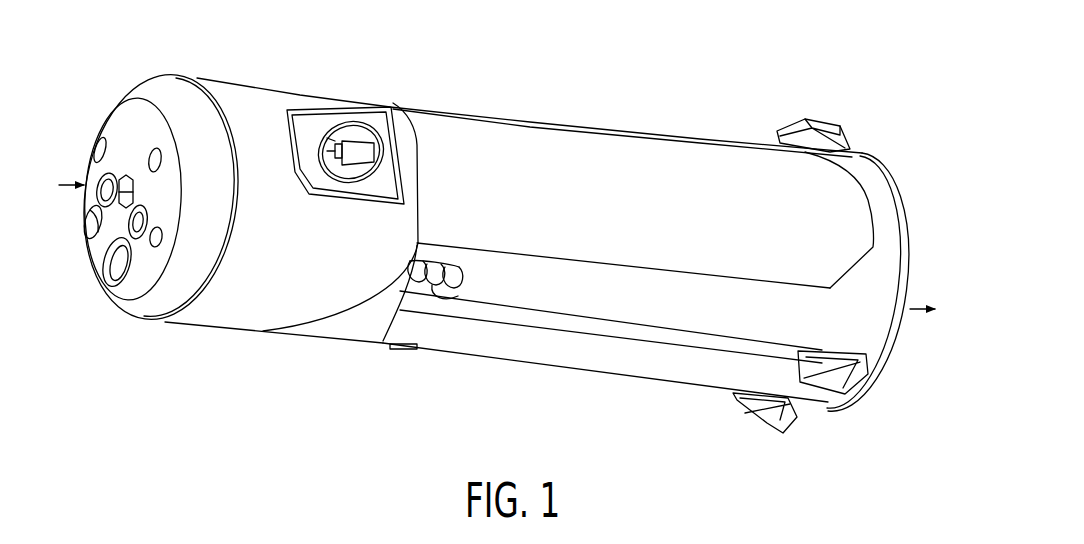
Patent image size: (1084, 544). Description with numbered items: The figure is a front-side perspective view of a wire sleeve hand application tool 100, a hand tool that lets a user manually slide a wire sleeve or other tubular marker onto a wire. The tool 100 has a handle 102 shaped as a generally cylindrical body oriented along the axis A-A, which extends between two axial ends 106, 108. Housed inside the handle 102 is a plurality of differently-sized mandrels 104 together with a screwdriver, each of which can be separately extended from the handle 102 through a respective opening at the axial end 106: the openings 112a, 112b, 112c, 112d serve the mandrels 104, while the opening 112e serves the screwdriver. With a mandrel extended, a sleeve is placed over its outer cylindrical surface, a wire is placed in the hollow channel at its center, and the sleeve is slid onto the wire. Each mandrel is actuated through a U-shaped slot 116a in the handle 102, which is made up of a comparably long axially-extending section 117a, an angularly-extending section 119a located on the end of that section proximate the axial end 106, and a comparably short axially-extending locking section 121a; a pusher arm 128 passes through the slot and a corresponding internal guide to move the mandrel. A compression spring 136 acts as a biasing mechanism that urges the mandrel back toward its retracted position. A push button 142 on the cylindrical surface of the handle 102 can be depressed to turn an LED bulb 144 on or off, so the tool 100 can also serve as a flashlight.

The wire sleeve hand application tool 100 is at (101, 376).
The handle 102 is at (549, 137).
The mandrels 104 is at (383, 343).
The axial end 106 is at (79, 167).
The axial end 108 is at (940, 270).
The opening 112a is at (160, 246).
The opening 112b is at (100, 137).
The opening 112c is at (85, 229).
The opening 112d is at (110, 284).
The opening 112e is at (128, 176).
The slot 116a is at (652, 337).
The axially-extending section 117a is at (540, 322).
The angularly-extending section 119a is at (434, 291).
The axially-extending locking section 121a is at (468, 268).
The pusher arm 128 is at (848, 146).
The compression spring 136 is at (441, 262).
The push button 142 is at (348, 133).
The LED bulb 144 is at (161, 153).